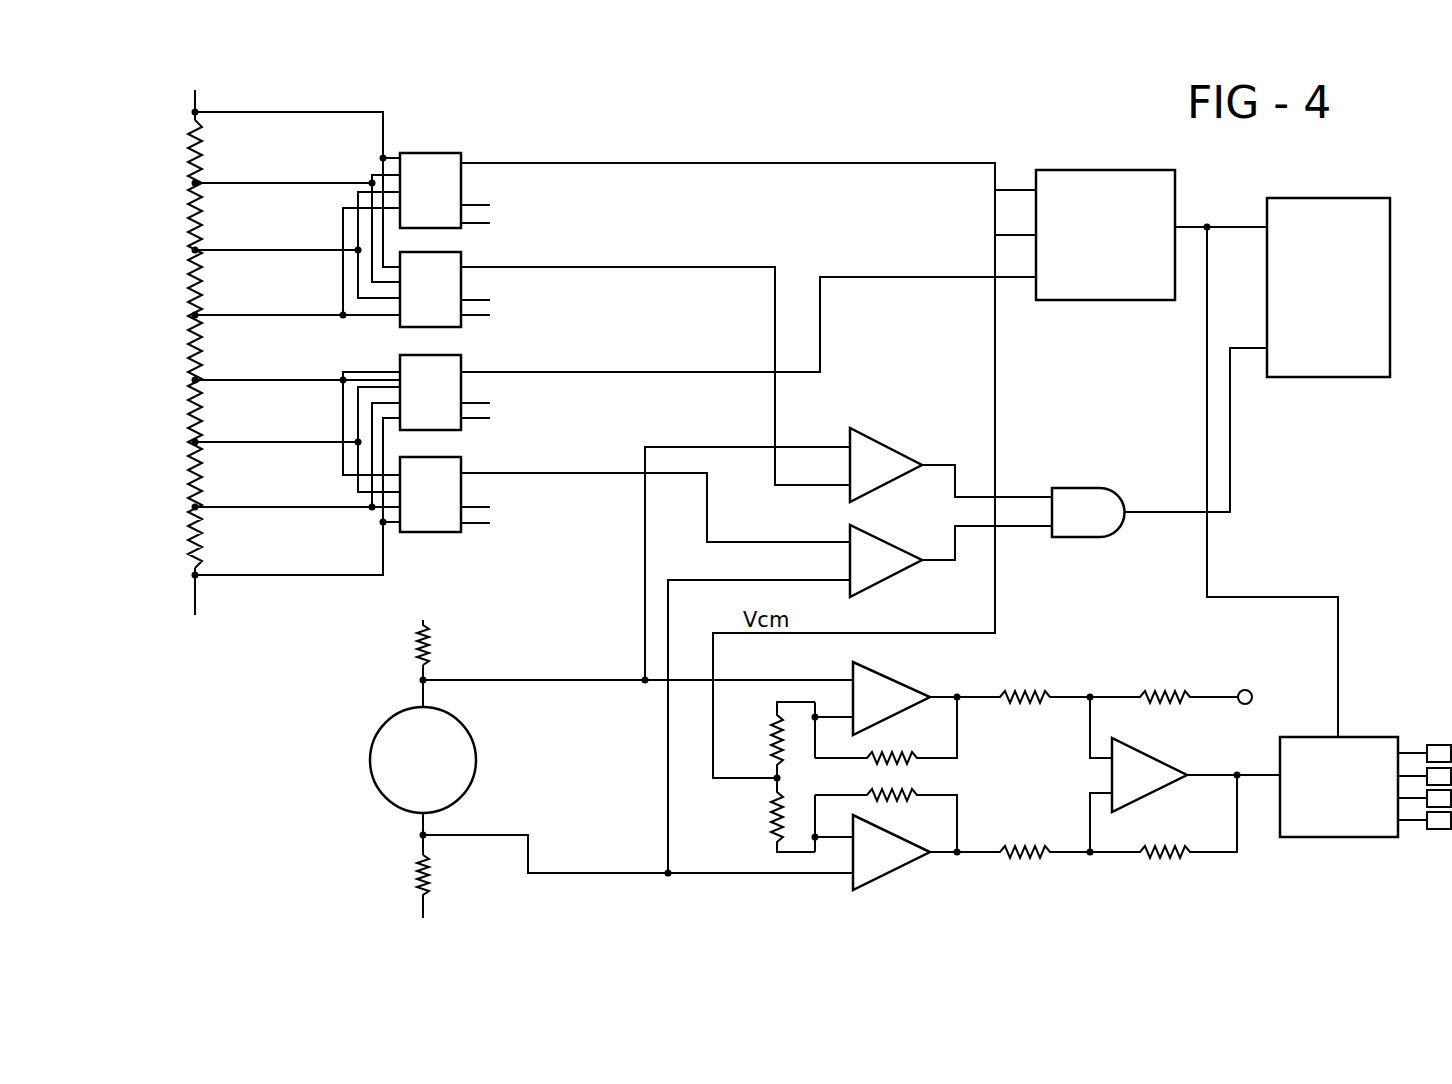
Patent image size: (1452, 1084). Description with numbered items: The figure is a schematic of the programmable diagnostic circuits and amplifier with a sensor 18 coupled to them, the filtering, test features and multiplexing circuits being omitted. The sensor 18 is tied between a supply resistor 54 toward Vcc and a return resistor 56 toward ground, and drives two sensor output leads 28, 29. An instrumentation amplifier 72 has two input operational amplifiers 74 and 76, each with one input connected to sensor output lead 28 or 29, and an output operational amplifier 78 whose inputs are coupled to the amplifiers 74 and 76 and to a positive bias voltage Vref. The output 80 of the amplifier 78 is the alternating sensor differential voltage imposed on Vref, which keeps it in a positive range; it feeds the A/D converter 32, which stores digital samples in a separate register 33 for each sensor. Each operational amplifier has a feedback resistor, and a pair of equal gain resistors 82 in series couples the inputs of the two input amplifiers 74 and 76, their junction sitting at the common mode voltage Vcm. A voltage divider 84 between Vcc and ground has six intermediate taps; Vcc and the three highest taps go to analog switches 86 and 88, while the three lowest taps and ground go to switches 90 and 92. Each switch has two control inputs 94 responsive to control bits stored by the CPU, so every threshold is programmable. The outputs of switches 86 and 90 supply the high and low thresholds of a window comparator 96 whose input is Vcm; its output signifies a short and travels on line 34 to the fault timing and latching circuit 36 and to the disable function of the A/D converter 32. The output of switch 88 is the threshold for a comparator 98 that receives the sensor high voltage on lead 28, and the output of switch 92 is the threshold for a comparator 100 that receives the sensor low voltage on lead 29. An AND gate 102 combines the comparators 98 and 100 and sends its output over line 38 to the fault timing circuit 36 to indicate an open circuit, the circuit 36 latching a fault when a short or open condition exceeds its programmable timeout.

The sensor 18 is at (370, 757).
The sensor output lead 28 is at (510, 680).
The sensor output lead 29 is at (573, 873).
The A/D converter 32 is at (1333, 837).
The register 33 is at (1440, 836).
The line 34 is at (1218, 227).
The fault timing and latching circuit 36 is at (1355, 377).
The AND gate output line 38 is at (1168, 512).
The pull-up resistor 54 is at (416, 660).
The pull-down resistor 56 is at (416, 870).
The instrumentation amplifier 72 is at (893, 876).
The input operational amplifier 74 is at (905, 681).
The input operational amplifier 76 is at (868, 886).
The output operational amplifier 78 is at (1155, 753).
The output 80 is at (1255, 775).
The gain resistors 82 is at (771, 751).
The voltage divider 84 is at (147, 192).
The analog switch 86 is at (430, 153).
The analog switch 88 is at (461, 282).
The analog switch 90 is at (461, 387).
The analog switch 92 is at (461, 483).
The control inputs 94 is at (490, 205).
The window comparator 96 is at (1097, 170).
The comparator 98 is at (880, 441).
The comparator 100 is at (878, 538).
The AND gate 102 is at (1077, 488).